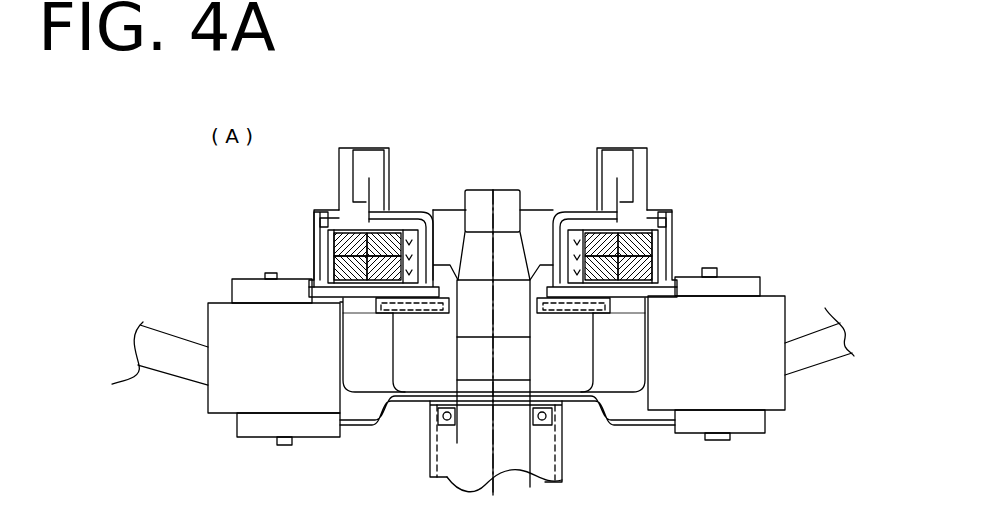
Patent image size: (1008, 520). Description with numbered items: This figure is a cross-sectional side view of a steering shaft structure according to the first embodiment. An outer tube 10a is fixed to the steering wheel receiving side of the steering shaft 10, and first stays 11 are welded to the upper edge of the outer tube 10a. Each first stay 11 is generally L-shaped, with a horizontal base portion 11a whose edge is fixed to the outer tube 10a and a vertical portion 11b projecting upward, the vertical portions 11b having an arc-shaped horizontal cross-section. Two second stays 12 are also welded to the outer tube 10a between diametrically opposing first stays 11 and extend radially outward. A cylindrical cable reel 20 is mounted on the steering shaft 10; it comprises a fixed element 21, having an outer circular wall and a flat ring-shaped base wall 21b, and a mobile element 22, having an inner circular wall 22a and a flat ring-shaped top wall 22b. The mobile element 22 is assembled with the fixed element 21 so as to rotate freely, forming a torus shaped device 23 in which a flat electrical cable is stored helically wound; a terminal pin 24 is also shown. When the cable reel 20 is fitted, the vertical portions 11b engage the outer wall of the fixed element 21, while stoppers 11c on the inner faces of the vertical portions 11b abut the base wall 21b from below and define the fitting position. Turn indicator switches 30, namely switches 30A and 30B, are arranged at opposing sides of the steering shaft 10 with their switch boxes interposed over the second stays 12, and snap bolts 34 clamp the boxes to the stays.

The steering shaft 10 is at (455, 401).
The outer tube 10a is at (563, 457).
The first stays 11 is at (590, 357).
The horizontal base portion 11a is at (480, 358).
The vertical portion 11b is at (384, 392).
The stoppers 11c is at (352, 306).
The second stays 12 is at (365, 426).
The cable reel 20 is at (436, 202).
The fixed element 21 is at (318, 235).
The base wall 21b is at (318, 222).
The mobile element 22 is at (394, 211).
The inner circular wall 22a is at (452, 211).
The top wall 22b is at (336, 222).
The torus shaped device 23 is at (326, 236).
The terminal pin 24 is at (376, 181).
The turn indicator switches 30 is at (197, 323).
The turn indicator switch 30A is at (212, 398).
The turn indicator switch 30B is at (774, 404).
The snap bolts 34 is at (268, 272).